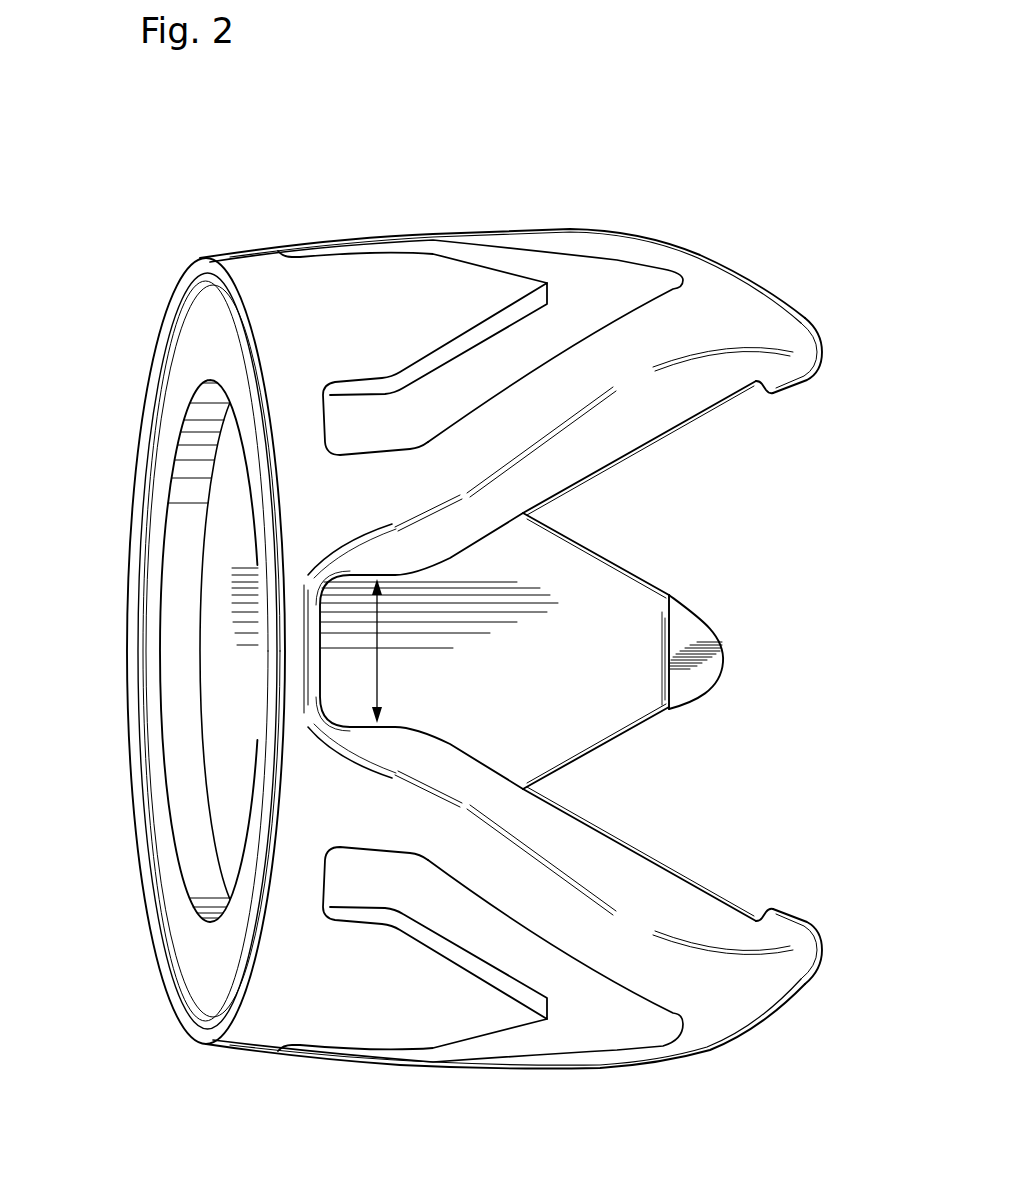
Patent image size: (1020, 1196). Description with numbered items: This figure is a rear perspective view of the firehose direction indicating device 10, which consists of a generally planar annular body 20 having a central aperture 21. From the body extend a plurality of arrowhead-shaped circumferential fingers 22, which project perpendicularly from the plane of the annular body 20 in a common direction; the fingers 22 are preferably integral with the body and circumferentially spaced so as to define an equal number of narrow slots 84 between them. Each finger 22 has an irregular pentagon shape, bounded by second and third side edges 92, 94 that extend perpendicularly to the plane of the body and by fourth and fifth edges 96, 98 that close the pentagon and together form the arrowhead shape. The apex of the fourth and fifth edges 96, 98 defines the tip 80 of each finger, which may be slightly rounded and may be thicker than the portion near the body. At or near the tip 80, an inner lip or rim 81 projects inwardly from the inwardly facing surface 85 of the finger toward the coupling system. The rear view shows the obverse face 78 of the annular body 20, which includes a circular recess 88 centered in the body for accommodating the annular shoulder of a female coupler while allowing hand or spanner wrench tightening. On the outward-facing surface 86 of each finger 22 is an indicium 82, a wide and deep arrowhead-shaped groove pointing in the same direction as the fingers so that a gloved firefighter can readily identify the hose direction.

The firehose direction indicating device 10 is at (696, 150).
The annular body 20 is at (228, 1037).
The aperture 21 is at (180, 702).
The arrowhead-shaped circumferential fingers 22 is at (730, 290).
The obverse face 78 is at (133, 845).
The tip 80 is at (826, 352).
The inner lip or rim 81 is at (795, 392).
The indicium 82 is at (413, 410).
The narrow slots 84 is at (313, 672).
The inwardly facing surface 85 is at (607, 697).
The outward-facing surface 86 is at (320, 303).
The circular recess 88 is at (190, 938).
The second side edge 92 is at (373, 563).
The third side edge 94 is at (370, 737).
The fourth edge 96 is at (567, 770).
The fifth edge 98 is at (637, 407).